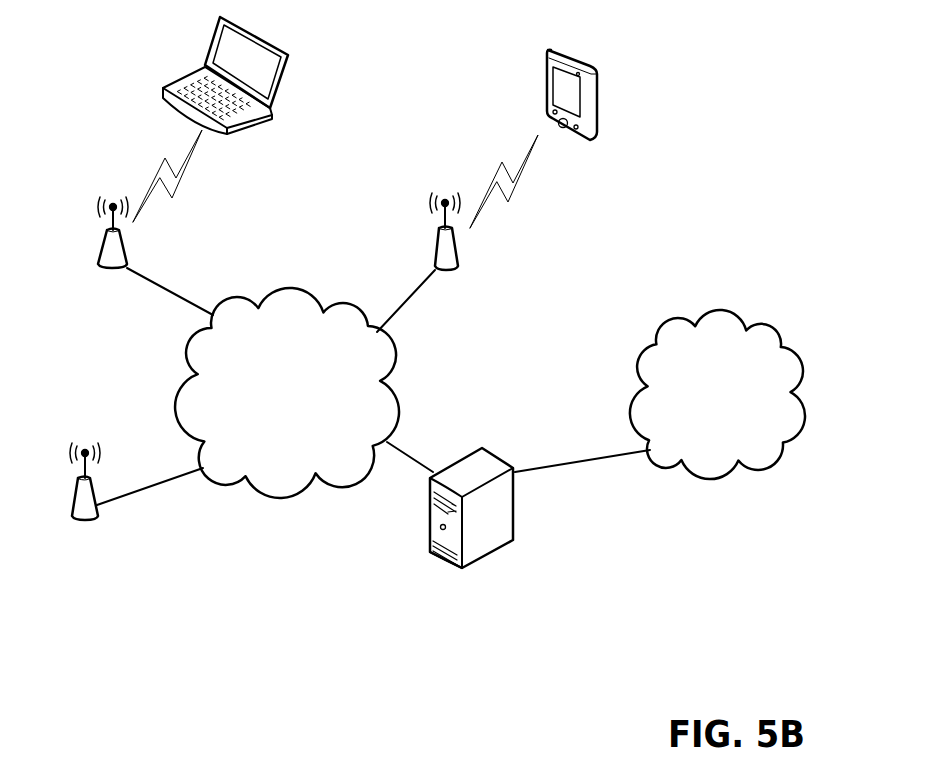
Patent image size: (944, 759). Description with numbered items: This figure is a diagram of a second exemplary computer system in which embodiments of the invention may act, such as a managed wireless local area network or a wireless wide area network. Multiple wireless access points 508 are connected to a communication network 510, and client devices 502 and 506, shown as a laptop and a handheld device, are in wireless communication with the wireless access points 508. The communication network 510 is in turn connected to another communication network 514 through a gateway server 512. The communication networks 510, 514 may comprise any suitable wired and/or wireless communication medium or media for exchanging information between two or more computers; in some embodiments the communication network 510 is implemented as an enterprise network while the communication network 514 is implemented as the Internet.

The client device 502 is at (302, 47).
The client device 506 is at (598, 62).
The wireless access point 508 is at (93, 193).
The communication network 510 is at (272, 391).
The gateway server 512 is at (502, 448).
The communication network 514 is at (702, 393).